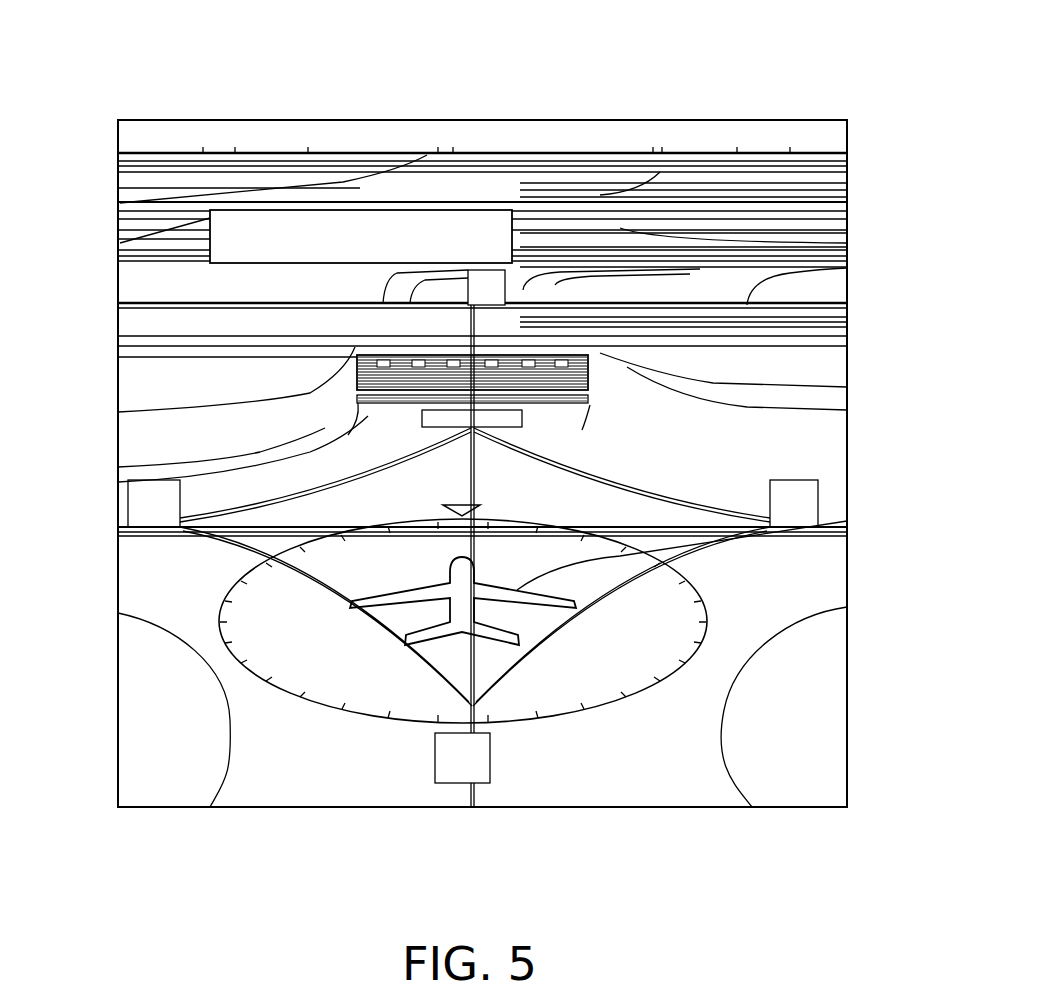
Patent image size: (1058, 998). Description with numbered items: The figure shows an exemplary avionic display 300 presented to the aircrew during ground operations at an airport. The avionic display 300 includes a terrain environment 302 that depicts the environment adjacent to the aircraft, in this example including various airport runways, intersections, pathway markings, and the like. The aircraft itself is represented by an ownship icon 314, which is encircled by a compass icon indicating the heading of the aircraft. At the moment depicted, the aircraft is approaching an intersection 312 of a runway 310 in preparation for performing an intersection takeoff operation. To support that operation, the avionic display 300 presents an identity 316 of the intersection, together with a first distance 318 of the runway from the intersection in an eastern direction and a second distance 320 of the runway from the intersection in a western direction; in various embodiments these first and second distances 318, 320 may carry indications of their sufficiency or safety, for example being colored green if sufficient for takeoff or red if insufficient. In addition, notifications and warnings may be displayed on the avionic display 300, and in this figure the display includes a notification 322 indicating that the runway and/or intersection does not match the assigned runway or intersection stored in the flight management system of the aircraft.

The avionic display 300 is at (150, 48).
The terrain environment 302 is at (221, 392).
The runway 310 is at (847, 270).
The intersection 312 is at (598, 340).
The ownship icon 314 is at (655, 557).
The identity of the intersection 316 is at (563, 427).
The first distance 318 is at (200, 468).
The second distance 320 is at (590, 407).
The notification 322 is at (350, 210).